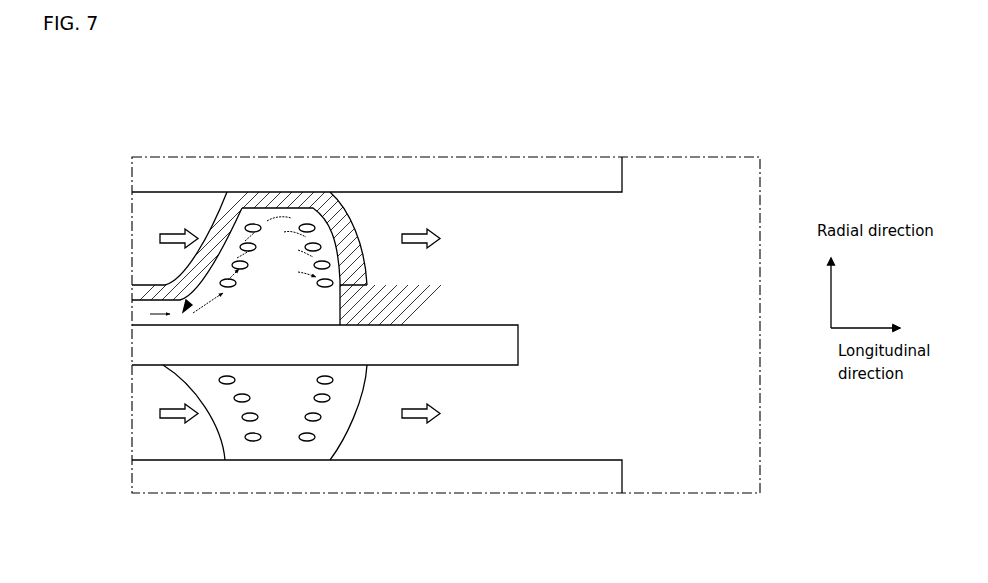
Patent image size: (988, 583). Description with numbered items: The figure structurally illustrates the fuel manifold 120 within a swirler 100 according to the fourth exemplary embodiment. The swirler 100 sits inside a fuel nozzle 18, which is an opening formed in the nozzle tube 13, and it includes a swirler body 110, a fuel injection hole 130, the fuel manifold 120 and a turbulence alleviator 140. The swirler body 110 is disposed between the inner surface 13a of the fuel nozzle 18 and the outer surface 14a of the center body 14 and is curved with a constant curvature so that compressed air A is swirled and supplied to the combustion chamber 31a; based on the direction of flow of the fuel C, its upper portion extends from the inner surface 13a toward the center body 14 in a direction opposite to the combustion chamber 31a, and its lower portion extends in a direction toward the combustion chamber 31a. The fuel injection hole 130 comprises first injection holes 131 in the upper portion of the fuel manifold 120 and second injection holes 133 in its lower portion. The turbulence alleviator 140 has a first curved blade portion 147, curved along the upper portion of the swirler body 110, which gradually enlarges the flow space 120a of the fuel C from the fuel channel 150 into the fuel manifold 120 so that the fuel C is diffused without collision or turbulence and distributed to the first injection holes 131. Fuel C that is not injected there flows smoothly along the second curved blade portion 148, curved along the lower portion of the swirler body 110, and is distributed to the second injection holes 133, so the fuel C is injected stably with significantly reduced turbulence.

The nozzle tube 13 is at (413, 175).
The inner surface of the fuel nozzle 13a is at (457, 194).
The center body 14 is at (155, 345).
The outer surface of the center body 14a is at (474, 284).
The fuel nozzle 18 is at (488, 214).
The combustion chamber 31a is at (667, 318).
The swirler 100 is at (295, 300).
The swirler body 110 is at (288, 418).
The fuel manifold 120 is at (281, 236).
The flow space 120a is at (231, 305).
The fuel injection hole 130 is at (280, 286).
The first injection holes 131 is at (242, 321).
The second injection holes 133 is at (303, 213).
The turbulence alleviator 140 is at (140, 188).
The first curved blade portion 147 is at (212, 300).
The second curved blade portion 148 is at (358, 222).
The fuel channel 150 is at (142, 307).
The compressed air A is at (170, 420).
The fuel C is at (212, 318).